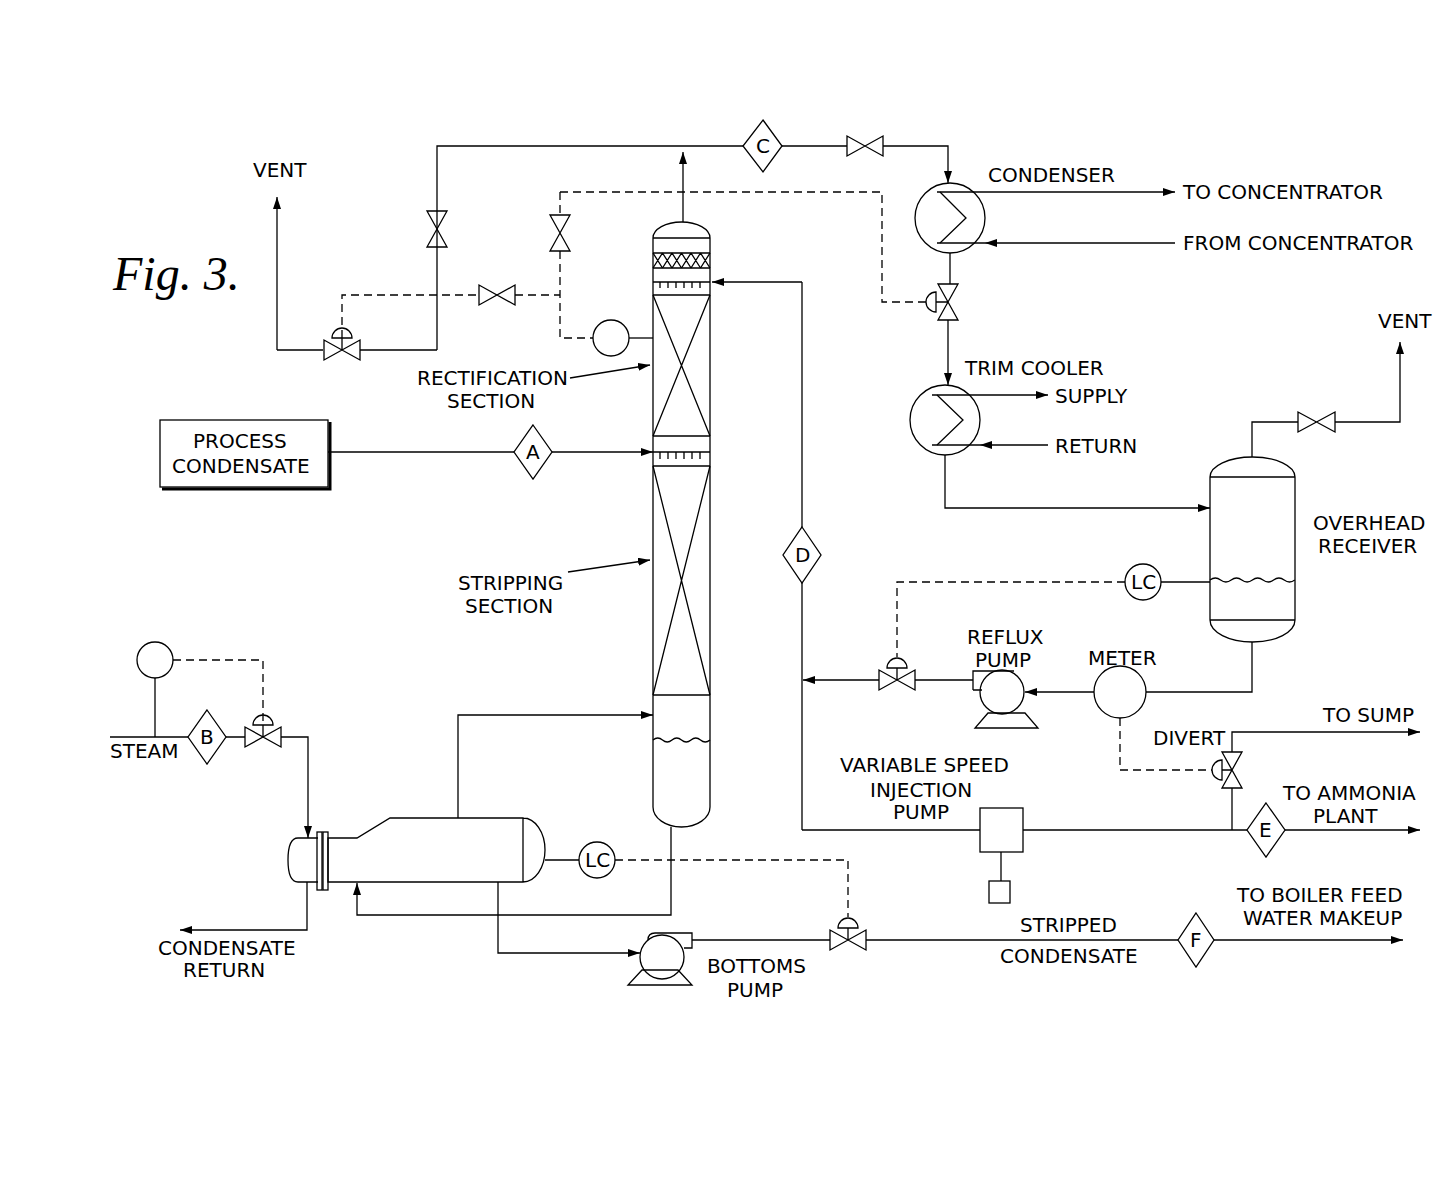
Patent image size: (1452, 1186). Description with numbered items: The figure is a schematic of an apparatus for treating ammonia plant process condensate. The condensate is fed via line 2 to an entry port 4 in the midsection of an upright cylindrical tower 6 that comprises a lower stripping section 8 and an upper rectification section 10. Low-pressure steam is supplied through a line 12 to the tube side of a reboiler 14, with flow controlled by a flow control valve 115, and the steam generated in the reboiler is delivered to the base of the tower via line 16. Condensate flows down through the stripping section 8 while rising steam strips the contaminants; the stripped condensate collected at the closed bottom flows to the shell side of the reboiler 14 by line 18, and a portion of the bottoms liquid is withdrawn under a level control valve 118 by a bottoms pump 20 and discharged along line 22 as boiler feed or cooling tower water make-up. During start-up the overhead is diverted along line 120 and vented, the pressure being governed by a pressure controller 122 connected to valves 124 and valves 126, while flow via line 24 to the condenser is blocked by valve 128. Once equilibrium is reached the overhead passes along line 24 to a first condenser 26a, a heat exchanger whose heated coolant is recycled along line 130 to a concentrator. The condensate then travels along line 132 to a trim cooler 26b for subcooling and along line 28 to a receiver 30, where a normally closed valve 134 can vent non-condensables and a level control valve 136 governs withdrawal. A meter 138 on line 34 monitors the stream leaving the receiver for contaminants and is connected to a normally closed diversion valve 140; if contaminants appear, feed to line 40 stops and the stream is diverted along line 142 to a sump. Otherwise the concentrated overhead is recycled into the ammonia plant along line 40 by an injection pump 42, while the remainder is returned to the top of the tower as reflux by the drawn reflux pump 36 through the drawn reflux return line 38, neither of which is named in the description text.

The line 2 is at (478, 452).
The entry port 4 is at (648, 455).
The upright cylindrical tower 6 is at (719, 489).
The stripping section 8 is at (712, 592).
The rectification section 10 is at (712, 375).
The line 12 is at (310, 760).
The reboiler 14 is at (535, 822).
The line 16 is at (540, 716).
The line 18 is at (672, 890).
The bottoms pump 20 is at (640, 977).
The line 22 is at (980, 942).
The line 24 is at (948, 152).
The first condenser 26a is at (986, 222).
The trim cooler 26b is at (913, 433).
The line 28 is at (1075, 510).
The receiver 30 is at (1296, 568).
The line 34 is at (1254, 680).
The reflux pump 36 is at (1022, 730).
The reflux return line 38 is at (800, 462).
The line 40 is at (800, 733).
The injection pump 42 is at (1015, 840).
The flow control valve 115 is at (268, 712).
The level control valve 118 is at (860, 927).
The line 120 is at (597, 150).
The pressure controller 122 is at (597, 324).
The valves 124 is at (445, 240).
The valves 126 is at (568, 232).
The valve 128 is at (858, 153).
The line 130 is at (1133, 192).
The line 132 is at (945, 340).
The normally closed valve 134 is at (1312, 435).
The level control valve 136 is at (900, 692).
The meter 138 is at (1138, 675).
The diversion valve 140 is at (1240, 778).
The line 142 is at (1340, 735).